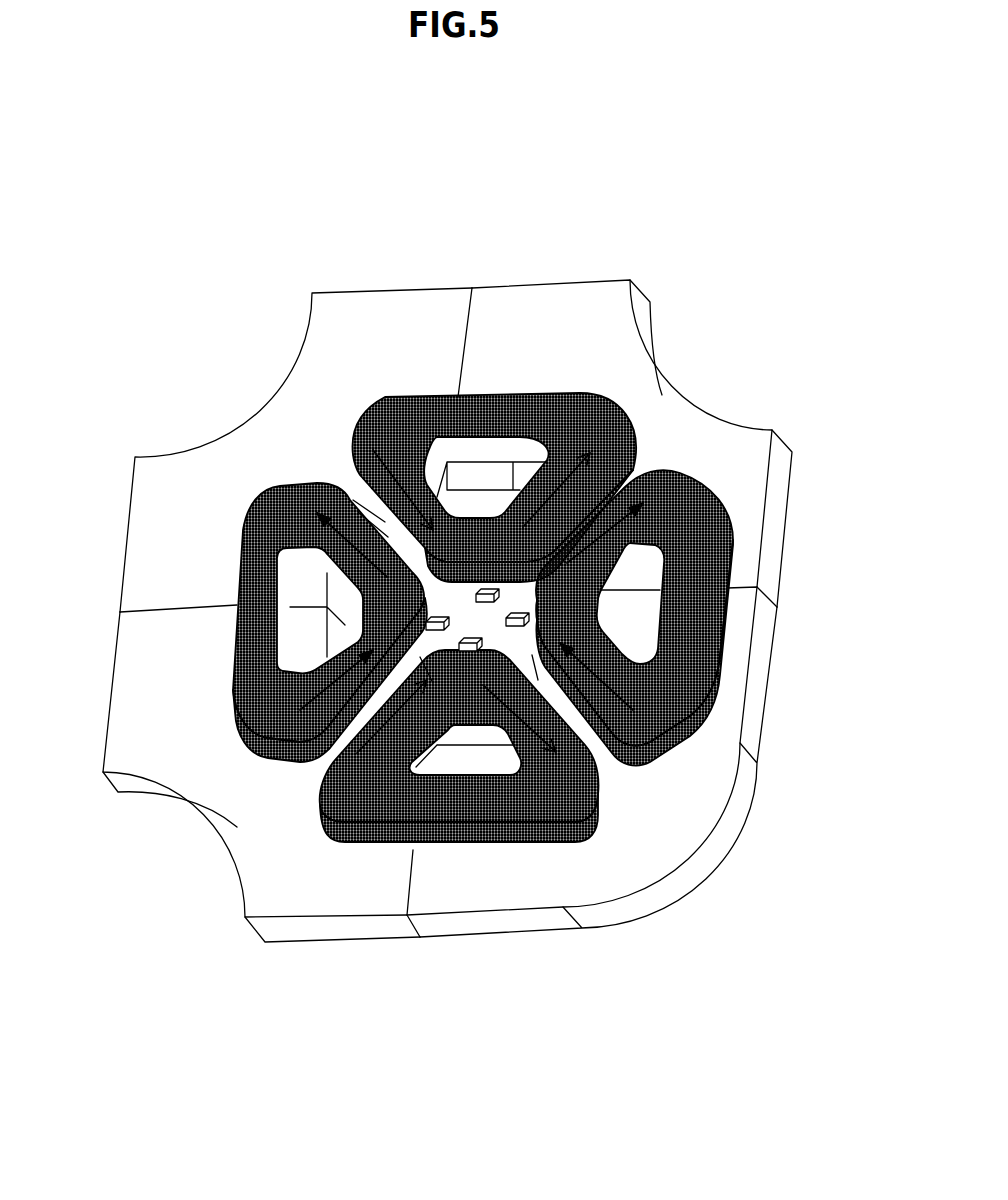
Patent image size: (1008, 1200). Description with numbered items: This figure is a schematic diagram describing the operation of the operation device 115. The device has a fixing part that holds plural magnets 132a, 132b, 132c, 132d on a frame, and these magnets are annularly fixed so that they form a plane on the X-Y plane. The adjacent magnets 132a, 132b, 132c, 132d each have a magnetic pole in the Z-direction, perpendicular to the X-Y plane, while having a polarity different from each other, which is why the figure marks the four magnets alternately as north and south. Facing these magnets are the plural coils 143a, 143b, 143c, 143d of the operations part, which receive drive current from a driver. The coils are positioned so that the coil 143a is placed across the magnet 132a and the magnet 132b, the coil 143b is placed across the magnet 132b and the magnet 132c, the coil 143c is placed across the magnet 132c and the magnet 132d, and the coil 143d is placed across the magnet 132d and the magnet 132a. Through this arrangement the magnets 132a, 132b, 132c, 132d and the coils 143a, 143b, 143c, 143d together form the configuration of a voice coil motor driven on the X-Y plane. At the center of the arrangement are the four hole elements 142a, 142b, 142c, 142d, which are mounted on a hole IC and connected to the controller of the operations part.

The operation device 115 is at (224, 164).
The magnet 132a is at (288, 932).
The magnet 132b is at (548, 920).
The magnet 132c is at (597, 313).
The magnet 132d is at (345, 322).
The hole element 142a is at (455, 648).
The hole element 142b is at (530, 614).
The hole element 142c is at (490, 594).
The hole element 142d is at (438, 617).
The coil 143a is at (447, 807).
The coil 143b is at (660, 710).
The coil 143c is at (593, 415).
The coil 143d is at (240, 672).